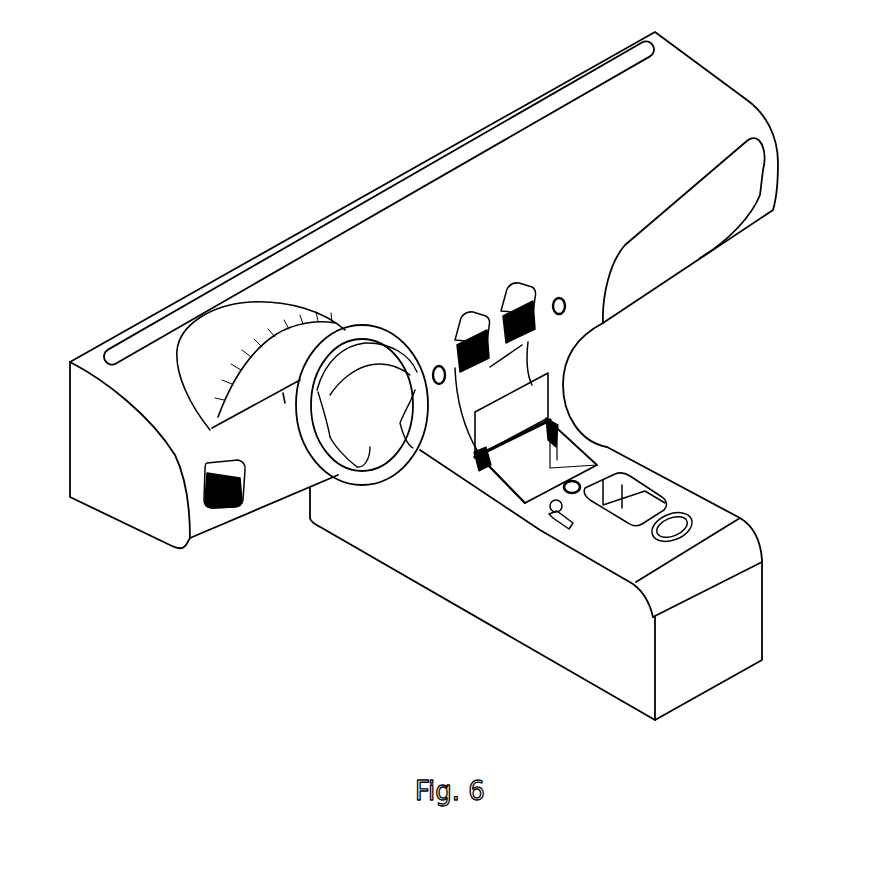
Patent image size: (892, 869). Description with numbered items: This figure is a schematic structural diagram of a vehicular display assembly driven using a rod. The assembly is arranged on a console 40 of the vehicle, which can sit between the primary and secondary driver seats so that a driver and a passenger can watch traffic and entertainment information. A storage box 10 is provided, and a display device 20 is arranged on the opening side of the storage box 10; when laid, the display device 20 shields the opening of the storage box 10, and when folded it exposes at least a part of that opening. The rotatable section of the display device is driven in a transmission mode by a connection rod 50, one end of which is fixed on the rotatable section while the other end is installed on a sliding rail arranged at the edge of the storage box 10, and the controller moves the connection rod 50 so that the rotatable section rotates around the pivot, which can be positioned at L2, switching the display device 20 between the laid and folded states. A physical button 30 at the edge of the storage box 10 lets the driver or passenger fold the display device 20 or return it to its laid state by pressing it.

The storage box 10 is at (547, 477).
The display device 20 is at (533, 407).
The physical button 30 is at (575, 484).
The console 40 is at (413, 228).
The connection rod 50 is at (483, 460).
The pivot position L2 is at (478, 460).